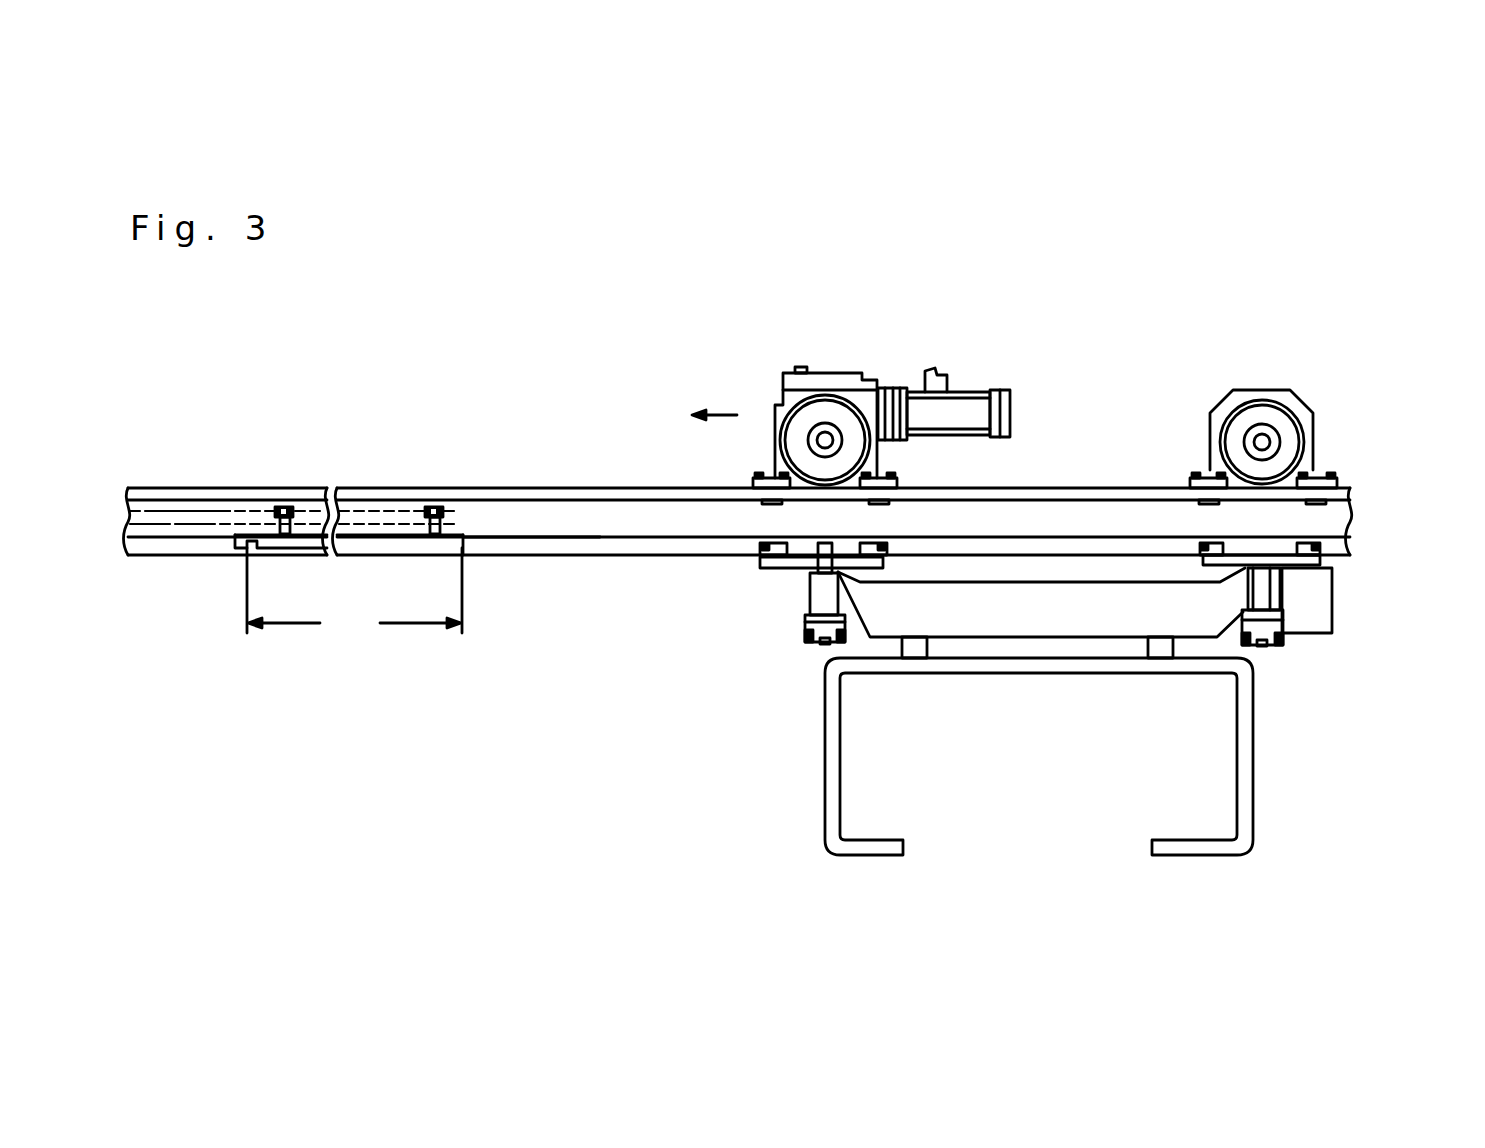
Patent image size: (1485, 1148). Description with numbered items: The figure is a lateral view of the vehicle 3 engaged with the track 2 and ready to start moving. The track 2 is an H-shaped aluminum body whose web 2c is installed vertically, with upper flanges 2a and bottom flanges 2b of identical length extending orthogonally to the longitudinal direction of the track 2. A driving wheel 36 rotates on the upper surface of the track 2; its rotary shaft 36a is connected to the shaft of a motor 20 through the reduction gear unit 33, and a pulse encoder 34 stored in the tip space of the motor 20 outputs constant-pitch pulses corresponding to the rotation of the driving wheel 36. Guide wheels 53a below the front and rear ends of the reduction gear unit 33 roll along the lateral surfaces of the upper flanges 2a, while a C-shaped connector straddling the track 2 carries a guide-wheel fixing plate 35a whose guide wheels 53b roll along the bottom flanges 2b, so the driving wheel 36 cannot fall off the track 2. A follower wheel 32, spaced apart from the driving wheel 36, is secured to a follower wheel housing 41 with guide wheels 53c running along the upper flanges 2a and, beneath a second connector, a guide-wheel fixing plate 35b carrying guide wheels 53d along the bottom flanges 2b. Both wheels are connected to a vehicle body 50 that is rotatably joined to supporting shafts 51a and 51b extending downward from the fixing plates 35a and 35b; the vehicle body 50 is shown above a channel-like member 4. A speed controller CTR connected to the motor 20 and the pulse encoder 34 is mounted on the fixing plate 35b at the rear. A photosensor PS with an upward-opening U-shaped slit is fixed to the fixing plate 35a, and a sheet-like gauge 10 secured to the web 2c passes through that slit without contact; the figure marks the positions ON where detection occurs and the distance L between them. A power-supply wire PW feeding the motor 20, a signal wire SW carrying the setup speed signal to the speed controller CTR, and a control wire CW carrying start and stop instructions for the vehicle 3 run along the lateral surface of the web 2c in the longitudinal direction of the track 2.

The track 2 is at (517, 476).
The upper flanges 2a is at (570, 490).
The bottom flanges 2b is at (577, 543).
The web 2c is at (517, 523).
The vehicle 3 is at (1280, 660).
The channel member 4 is at (1243, 805).
The gauge 10 is at (368, 543).
The motor 20 is at (967, 388).
The follower wheel 32 is at (1293, 390).
The reduction gear unit 33 is at (827, 368).
The pulse encoder 34 is at (1007, 424).
The guide-wheel fixing plate 35a is at (773, 566).
The guide-wheel fixing plate 35b is at (1300, 567).
The driving wheel 36 is at (780, 415).
The rotary shaft 36a is at (820, 433).
The follower wheel housing 41 is at (1223, 403).
The vehicle body 50 is at (997, 580).
The supporting shaft 51a is at (820, 642).
The supporting shaft 51b is at (1260, 640).
The guide wheels 53a is at (735, 487).
The guide wheels 53b is at (767, 562).
The guide wheels 53c is at (1200, 492).
The guide wheels 53d is at (1210, 540).
The power-supply wire PW is at (208, 510).
The signal wire SW is at (153, 527).
The control wire CW is at (196, 530).
The detection on position ON is at (354, 609).
The detection length L is at (354, 623).
The photosensor PS is at (805, 580).
The speed controller CTR is at (1303, 620).